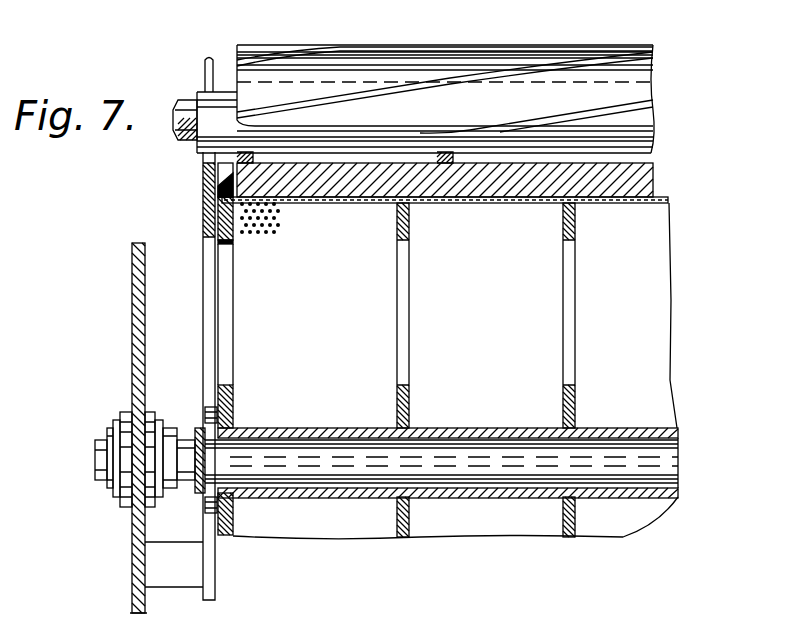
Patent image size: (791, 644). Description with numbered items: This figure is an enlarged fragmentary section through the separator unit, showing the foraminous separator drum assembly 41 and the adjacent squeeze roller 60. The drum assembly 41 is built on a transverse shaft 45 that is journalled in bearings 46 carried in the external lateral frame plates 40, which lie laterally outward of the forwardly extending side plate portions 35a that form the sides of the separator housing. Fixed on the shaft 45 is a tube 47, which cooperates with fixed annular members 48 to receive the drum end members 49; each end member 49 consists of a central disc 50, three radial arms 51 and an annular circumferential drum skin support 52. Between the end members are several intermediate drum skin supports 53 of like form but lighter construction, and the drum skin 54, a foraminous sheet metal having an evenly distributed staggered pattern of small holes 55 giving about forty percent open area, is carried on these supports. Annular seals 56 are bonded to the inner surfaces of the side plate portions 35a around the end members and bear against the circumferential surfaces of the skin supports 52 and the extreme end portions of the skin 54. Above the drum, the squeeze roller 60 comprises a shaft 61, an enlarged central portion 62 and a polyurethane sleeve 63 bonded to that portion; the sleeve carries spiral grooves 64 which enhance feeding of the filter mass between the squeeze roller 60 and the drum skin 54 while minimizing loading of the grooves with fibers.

The forwardly extending portion of hopper side plate 35a is at (207, 211).
The external lateral frame plate 40 is at (132, 343).
The foraminous separator drum assembly 41 is at (632, 538).
The transverse shaft 45 is at (663, 457).
The bearing 46 is at (120, 413).
The tube 47 is at (332, 423).
The fixed annular member 48 is at (195, 430).
The drum end member 49 is at (259, 344).
The central disc 50 is at (228, 397).
The radial arm 51 is at (228, 307).
The annular circumferential drum skin support 52 is at (228, 232).
The intermediate drum skin support 53 is at (570, 307).
The drum skin 54 is at (663, 197).
The hole 55 is at (280, 231).
The annular seal 56 is at (213, 181).
The squeeze roller 60 is at (666, 67).
The shaft 61 is at (186, 104).
The enlarged central portion 62 is at (226, 95).
The polyurethane sleeve 63 is at (465, 58).
The groove 64 is at (610, 110).